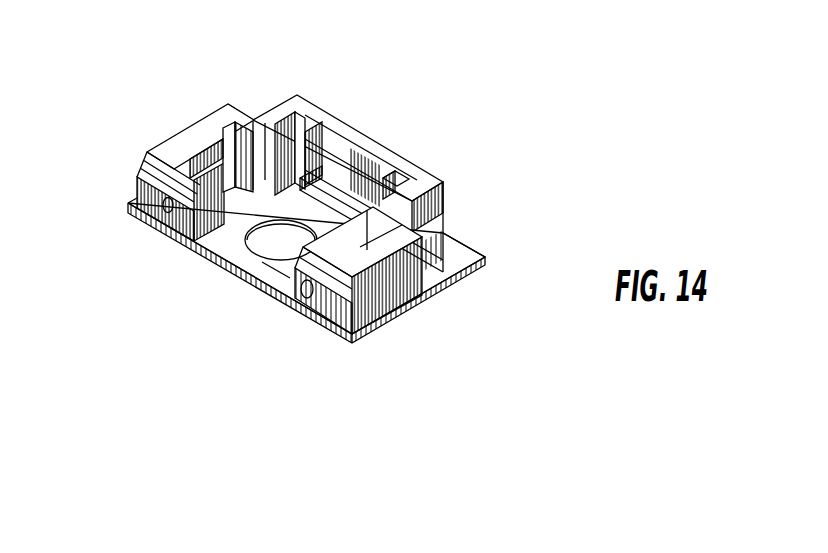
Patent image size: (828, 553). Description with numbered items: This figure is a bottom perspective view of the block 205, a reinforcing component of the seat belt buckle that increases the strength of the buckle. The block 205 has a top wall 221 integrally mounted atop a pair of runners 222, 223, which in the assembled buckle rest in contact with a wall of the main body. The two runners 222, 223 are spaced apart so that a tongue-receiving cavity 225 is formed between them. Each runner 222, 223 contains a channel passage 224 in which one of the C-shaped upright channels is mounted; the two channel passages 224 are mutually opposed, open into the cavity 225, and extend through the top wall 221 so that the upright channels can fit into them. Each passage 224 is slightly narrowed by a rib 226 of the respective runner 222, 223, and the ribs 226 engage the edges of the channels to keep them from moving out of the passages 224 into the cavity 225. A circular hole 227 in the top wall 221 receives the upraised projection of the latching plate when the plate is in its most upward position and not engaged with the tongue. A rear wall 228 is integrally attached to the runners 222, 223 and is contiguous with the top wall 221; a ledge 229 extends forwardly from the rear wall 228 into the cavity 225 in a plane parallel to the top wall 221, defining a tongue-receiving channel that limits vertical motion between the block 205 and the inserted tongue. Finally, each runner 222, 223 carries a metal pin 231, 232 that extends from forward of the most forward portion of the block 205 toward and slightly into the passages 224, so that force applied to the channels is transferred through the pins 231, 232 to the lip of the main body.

The block 205 is at (498, 104).
The top wall 221 is at (220, 233).
The runner 222 is at (173, 155).
The runner 223 is at (404, 229).
The channel passage 224 is at (214, 130).
The tongue-receiving cavity 225 is at (271, 278).
The rib 226 is at (300, 143).
The circular hole 227 is at (265, 246).
The rear wall 228 is at (300, 98).
The ledge 229 is at (355, 172).
The metal pin 231 is at (166, 209).
The metal pin 232 is at (306, 298).